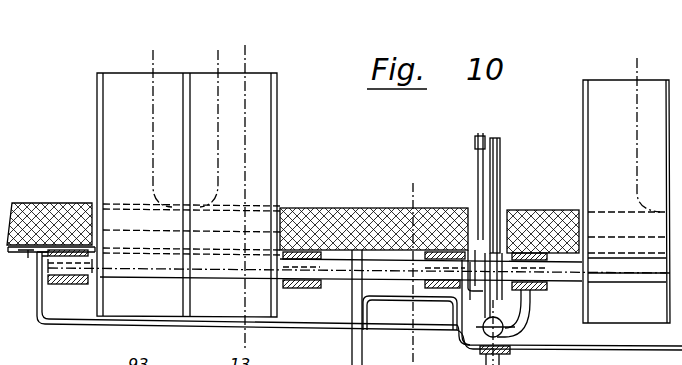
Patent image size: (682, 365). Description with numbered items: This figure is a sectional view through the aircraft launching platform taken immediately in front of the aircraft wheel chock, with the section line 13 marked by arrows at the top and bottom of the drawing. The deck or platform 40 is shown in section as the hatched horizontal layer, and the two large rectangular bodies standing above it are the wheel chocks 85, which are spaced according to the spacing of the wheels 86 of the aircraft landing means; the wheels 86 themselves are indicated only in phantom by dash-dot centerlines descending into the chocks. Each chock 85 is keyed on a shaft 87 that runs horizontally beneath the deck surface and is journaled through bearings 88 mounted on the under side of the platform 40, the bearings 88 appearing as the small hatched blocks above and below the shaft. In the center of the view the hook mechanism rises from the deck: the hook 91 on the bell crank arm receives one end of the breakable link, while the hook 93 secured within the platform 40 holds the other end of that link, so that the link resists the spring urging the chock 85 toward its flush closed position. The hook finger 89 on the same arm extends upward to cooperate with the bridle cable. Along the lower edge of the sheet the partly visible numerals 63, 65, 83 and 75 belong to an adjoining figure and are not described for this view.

The section line 13- 13 is at (245, 55).
The platform 40 is at (331, 212).
The wheel chock 85 is at (279, 131).
The wheel 86 is at (152, 56).
The shaft 87 is at (335, 279).
The bearing 88 is at (313, 290).
The hook finger 89 is at (501, 149).
The hook 91 is at (475, 146).
The hook 93 is at (473, 210).
The element 63 is at (37, 360).
The element 65 is at (66, 360).
The element 83 is at (101, 360).
The element 75 is at (180, 360).